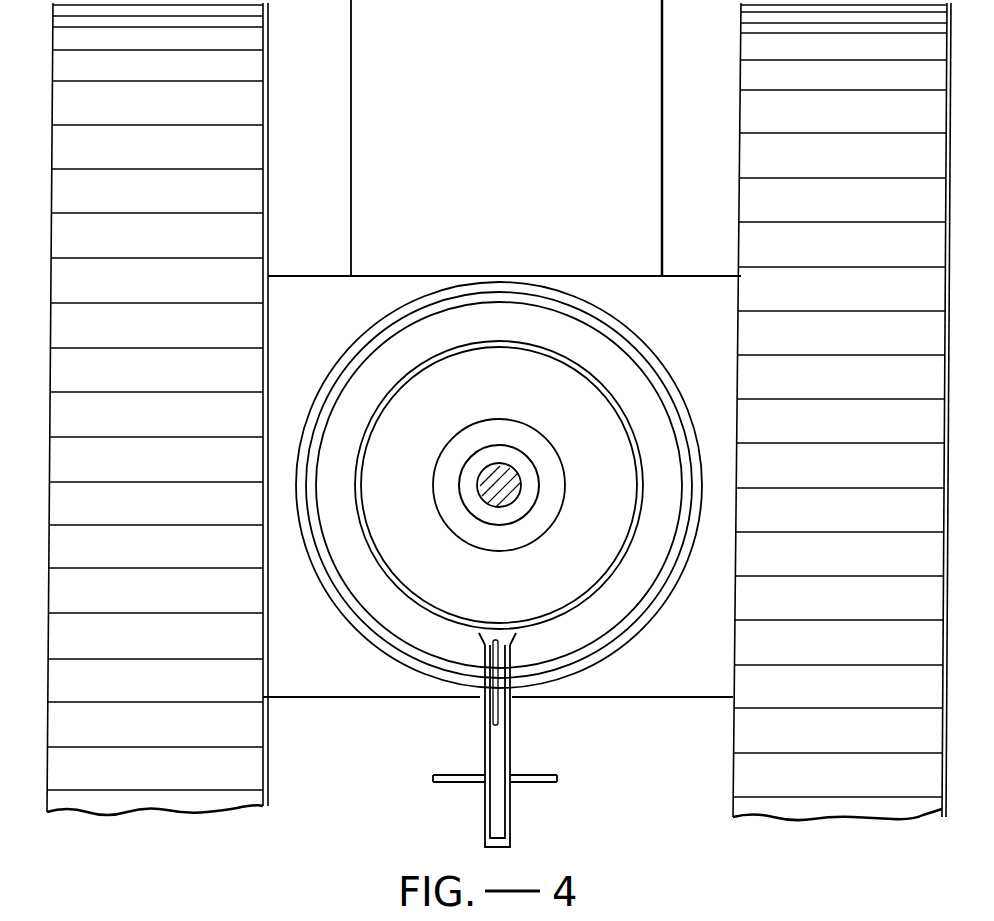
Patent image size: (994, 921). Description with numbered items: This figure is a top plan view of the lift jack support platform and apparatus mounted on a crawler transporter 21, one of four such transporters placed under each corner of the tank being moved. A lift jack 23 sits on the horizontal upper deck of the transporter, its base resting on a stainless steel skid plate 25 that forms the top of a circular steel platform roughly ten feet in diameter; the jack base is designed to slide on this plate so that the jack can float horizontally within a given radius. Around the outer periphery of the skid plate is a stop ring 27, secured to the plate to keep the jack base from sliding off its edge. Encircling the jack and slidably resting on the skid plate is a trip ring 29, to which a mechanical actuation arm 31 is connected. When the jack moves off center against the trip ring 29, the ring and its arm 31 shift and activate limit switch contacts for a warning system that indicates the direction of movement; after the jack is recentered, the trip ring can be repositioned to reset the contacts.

The crawler transporter 21 is at (649, 744).
The lift jack 23 is at (535, 465).
The stainless steel skid plate 25 is at (620, 358).
The stop ring 27 is at (660, 380).
The trip ring 29 is at (638, 445).
The mechanical actuation arm 31 is at (508, 657).